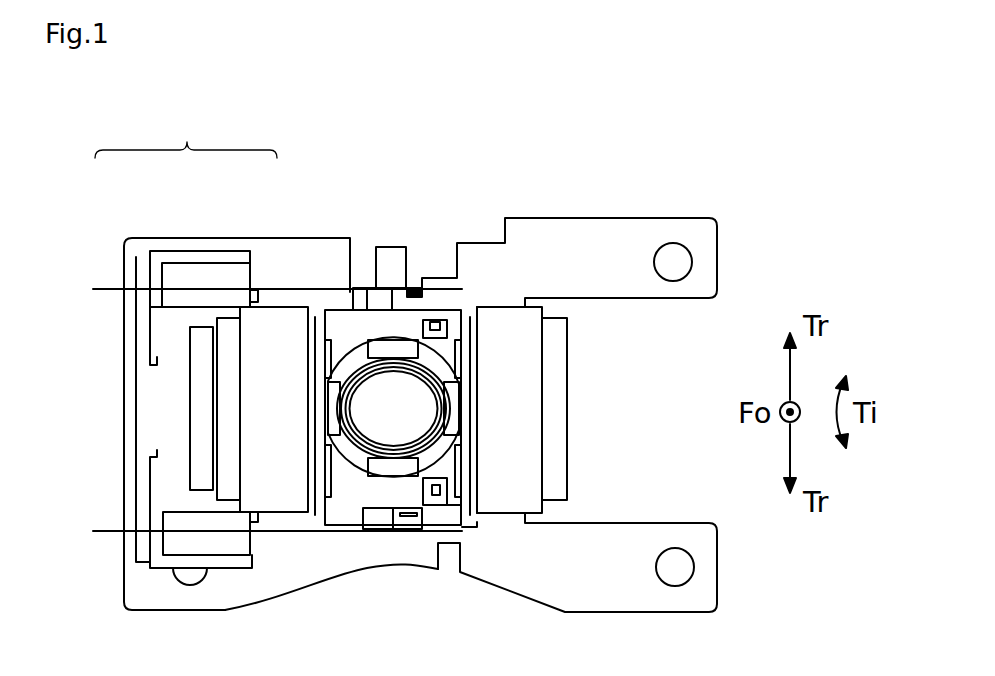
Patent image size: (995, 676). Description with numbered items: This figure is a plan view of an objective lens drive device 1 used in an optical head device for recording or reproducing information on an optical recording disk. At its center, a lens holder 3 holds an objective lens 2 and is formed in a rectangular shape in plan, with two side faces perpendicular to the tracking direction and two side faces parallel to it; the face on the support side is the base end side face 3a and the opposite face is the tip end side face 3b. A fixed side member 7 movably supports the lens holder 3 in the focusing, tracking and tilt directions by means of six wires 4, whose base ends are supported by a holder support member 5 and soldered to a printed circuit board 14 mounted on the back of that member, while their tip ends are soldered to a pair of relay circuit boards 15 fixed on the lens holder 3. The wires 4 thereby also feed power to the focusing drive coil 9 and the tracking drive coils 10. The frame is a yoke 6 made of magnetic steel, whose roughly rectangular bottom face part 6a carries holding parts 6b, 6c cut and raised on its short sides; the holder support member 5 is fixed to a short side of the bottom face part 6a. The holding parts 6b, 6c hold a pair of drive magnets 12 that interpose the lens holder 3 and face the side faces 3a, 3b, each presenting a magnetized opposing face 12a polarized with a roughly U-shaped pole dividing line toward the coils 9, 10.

The objective lens drive device 1 is at (748, 135).
The objective lens 2 is at (400, 400).
The lens holder 3 is at (345, 327).
The base end side face 3a is at (317, 497).
The tip end side face 3b is at (462, 522).
The wires 4 is at (300, 288).
The holder support member 5 is at (168, 327).
The yoke 6 is at (275, 258).
The bottom face part 6a is at (568, 598).
The holding part 6b is at (548, 434).
The holding part 6c is at (202, 465).
The fixed side member 7 is at (186, 134).
The focusing drive coil 9 is at (320, 408).
The tracking drive coils 10 is at (330, 343).
The drive magnets 12 is at (272, 375).
The magnetized opposing face 12a is at (313, 307).
The printed circuit board 14 is at (143, 513).
The relay circuit boards 15 is at (410, 287).